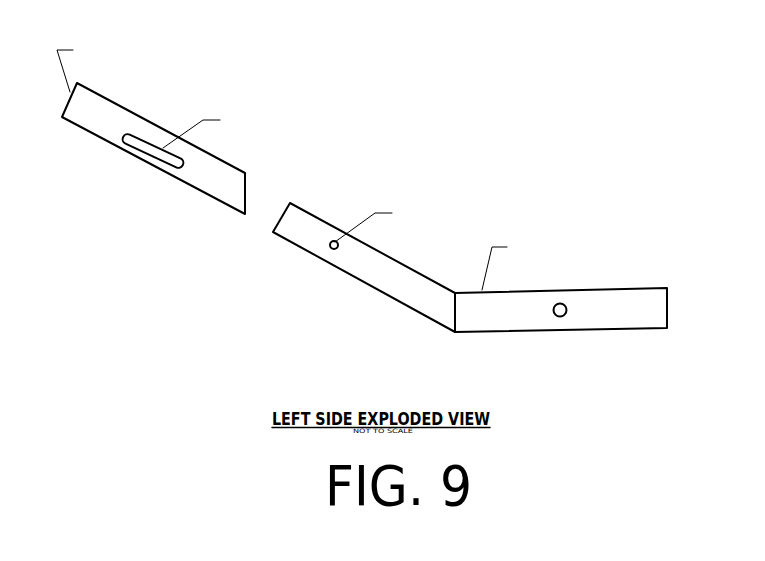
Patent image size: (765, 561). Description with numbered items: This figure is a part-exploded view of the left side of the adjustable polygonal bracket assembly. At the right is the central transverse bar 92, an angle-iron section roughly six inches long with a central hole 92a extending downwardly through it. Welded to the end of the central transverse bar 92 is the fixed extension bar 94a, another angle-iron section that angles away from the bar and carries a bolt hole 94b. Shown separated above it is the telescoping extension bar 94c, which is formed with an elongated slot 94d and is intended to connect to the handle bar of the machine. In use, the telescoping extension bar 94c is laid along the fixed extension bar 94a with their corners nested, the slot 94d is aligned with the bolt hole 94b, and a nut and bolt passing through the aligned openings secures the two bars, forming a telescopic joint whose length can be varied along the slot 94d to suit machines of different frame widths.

The central transverse bar 92 is at (643, 298).
The central hole 92a is at (563, 317).
The fixed extension bar 94a is at (303, 232).
The bolt hole 94b is at (334, 240).
The telescoping extension bar 94c is at (105, 113).
The slot 94d is at (137, 145).